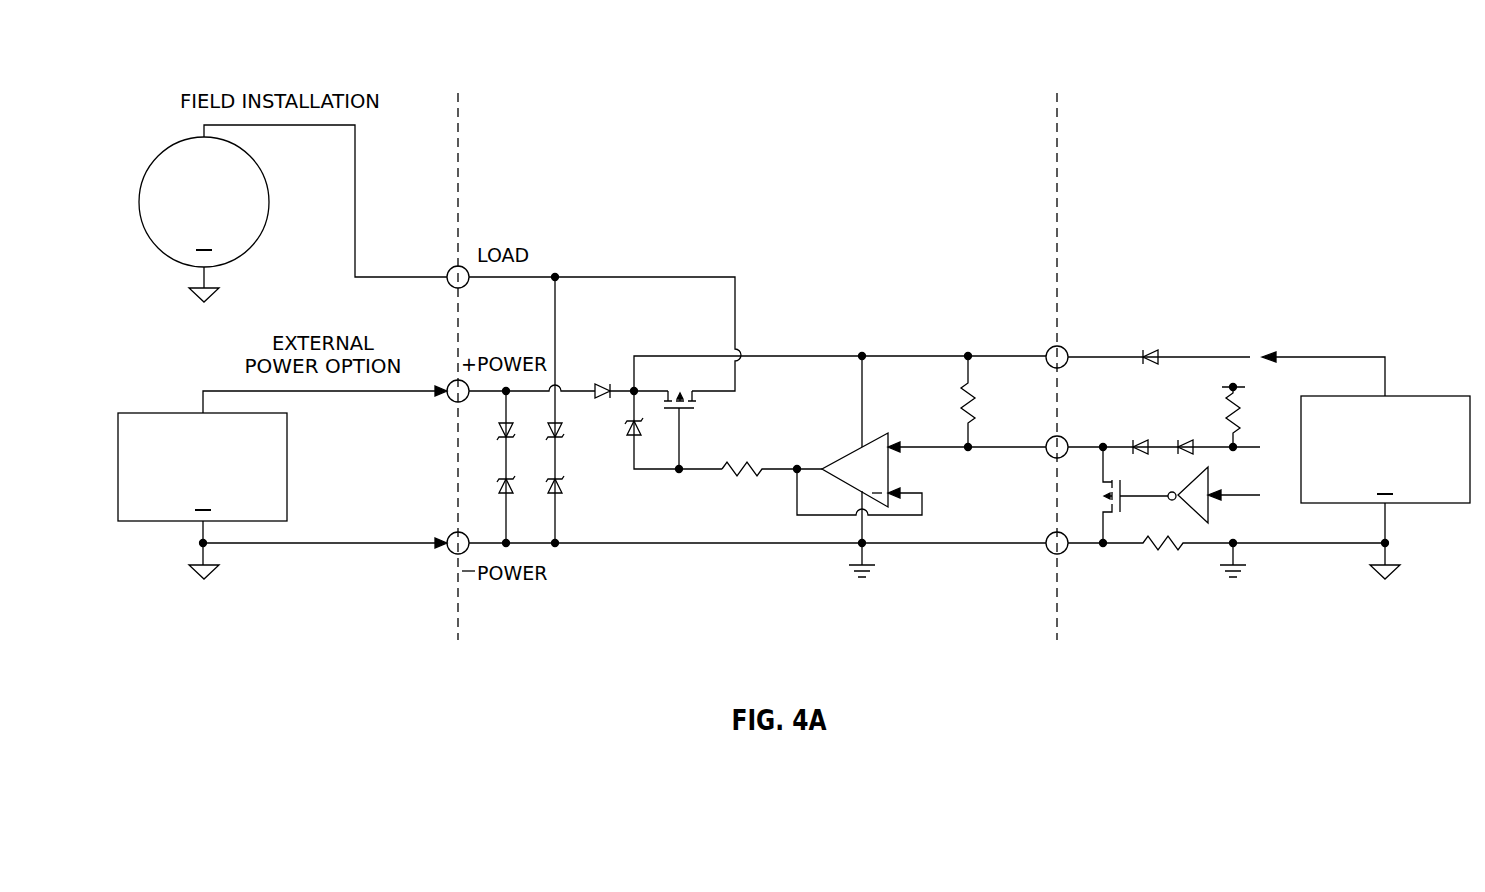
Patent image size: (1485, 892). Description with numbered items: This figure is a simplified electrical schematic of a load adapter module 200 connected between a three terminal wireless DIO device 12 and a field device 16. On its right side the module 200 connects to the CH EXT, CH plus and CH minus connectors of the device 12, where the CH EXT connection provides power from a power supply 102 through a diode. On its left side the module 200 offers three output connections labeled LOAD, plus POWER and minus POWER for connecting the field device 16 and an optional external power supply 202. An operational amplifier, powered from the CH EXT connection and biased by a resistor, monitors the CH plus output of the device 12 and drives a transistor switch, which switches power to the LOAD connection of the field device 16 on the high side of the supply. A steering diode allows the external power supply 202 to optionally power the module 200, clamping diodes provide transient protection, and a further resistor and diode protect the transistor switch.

The three terminal wireless DIO device 12 is at (1332, 49).
The field device 16 is at (165, 150).
The power supply 102 is at (1415, 396).
The load adapter module 200 is at (750, 147).
The external power supply 202 is at (165, 522).